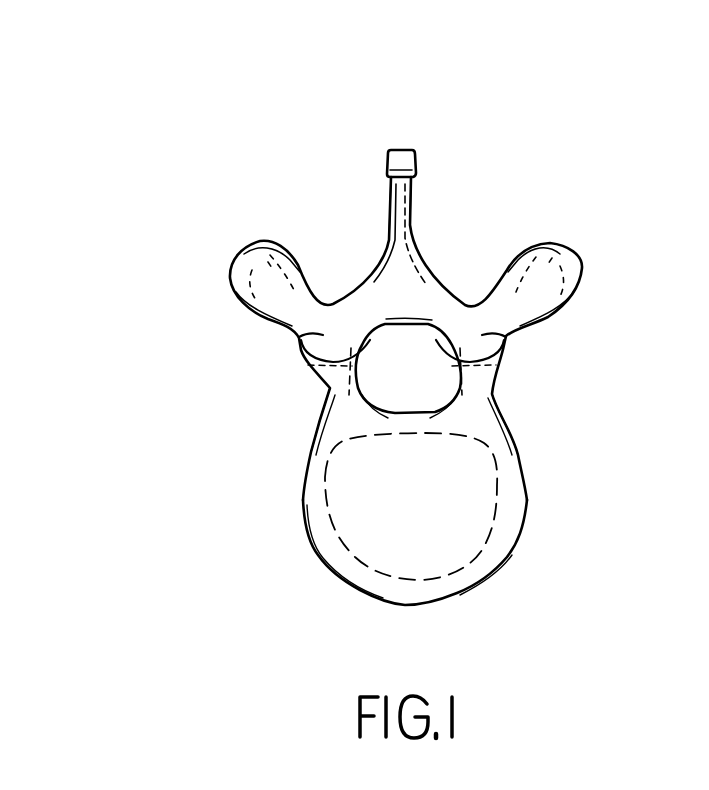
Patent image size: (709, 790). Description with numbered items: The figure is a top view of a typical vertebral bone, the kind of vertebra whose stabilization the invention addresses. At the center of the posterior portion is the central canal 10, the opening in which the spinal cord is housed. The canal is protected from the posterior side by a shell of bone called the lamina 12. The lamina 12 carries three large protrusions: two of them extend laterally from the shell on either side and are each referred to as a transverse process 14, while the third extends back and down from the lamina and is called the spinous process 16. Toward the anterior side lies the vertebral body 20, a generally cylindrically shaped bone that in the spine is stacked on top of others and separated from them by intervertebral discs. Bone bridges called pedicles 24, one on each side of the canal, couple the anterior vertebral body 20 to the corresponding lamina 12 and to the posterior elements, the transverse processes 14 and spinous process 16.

The central canal 10 is at (428, 387).
The lamina 12 is at (473, 227).
The transverse process 14 is at (240, 248).
The spinous process 16 is at (402, 150).
The vertebral body 20 is at (442, 522).
The pedicle 24 is at (330, 388).